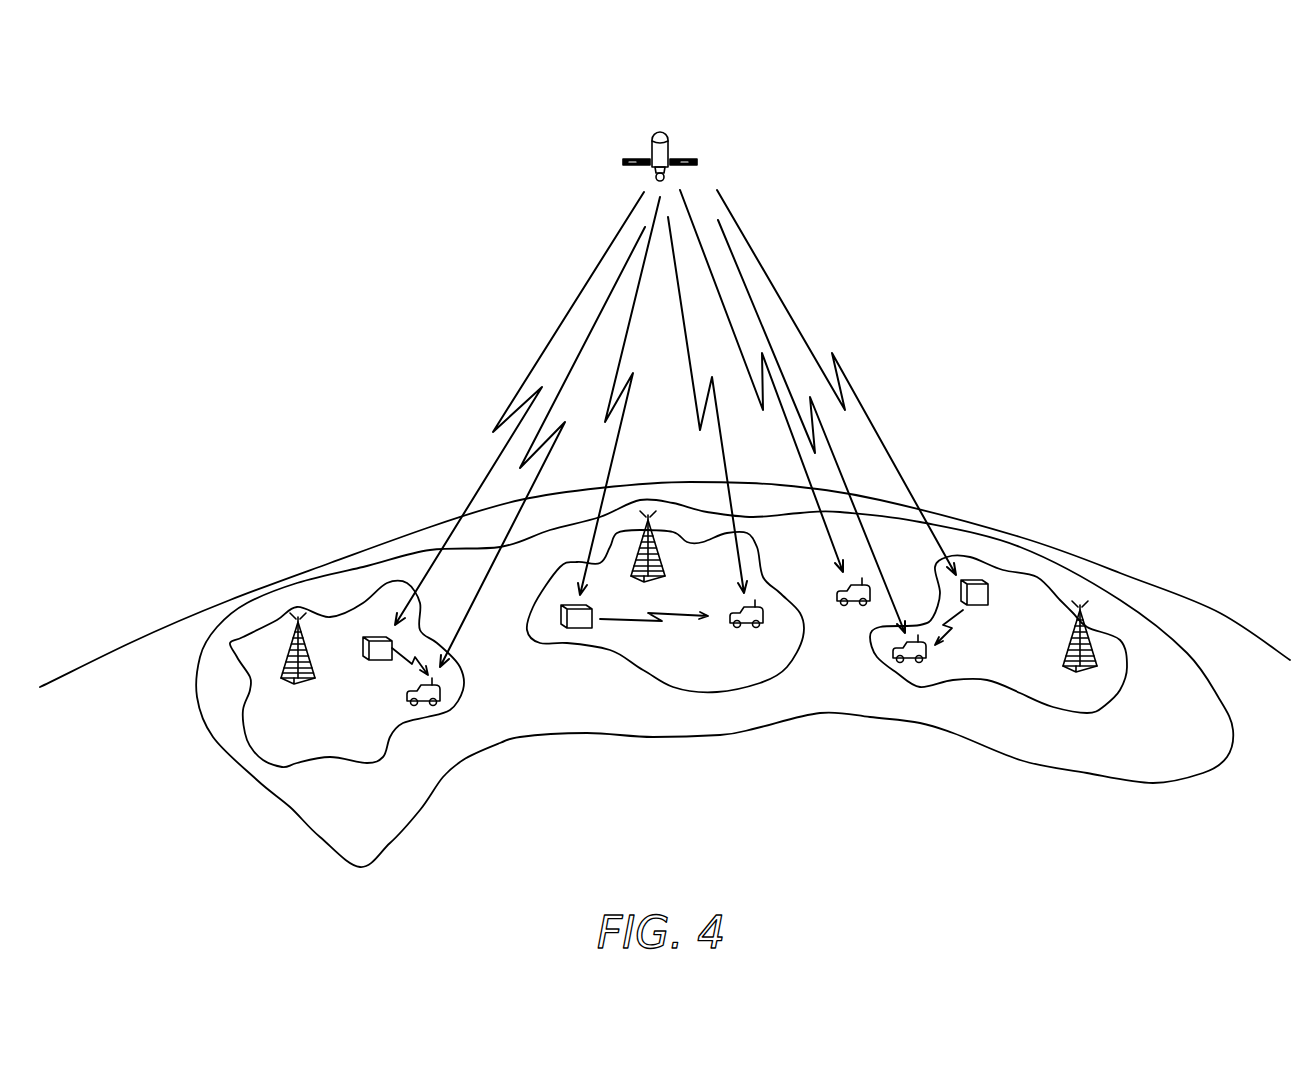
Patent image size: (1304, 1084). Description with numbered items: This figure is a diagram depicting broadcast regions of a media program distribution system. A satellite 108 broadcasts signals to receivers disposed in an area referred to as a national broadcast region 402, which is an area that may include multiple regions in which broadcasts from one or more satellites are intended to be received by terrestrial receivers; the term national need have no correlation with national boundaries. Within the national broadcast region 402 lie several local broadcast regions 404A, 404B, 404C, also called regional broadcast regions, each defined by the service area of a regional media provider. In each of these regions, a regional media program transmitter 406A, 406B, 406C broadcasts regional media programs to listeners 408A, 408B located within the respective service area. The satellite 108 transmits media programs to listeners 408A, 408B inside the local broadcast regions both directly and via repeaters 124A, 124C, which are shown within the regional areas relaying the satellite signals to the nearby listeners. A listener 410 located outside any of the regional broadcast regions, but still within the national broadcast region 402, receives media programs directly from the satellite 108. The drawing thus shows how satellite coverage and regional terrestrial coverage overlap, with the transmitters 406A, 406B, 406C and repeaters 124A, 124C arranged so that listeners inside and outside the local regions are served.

The satellite 108 is at (683, 155).
The national broadcast region 402 is at (535, 738).
The local broadcast region 404A is at (282, 767).
The local broadcast region 404B is at (613, 657).
The local broadcast region 404C is at (933, 688).
The regional media program transmitter 406A is at (290, 645).
The regional media program transmitter 406B is at (660, 518).
The regional media program transmitter 406C is at (1088, 632).
The repeater 124A is at (380, 637).
The repeater 124C is at (990, 587).
The listener 408A is at (420, 705).
The listener 408B is at (745, 627).
The listener 410 is at (853, 603).